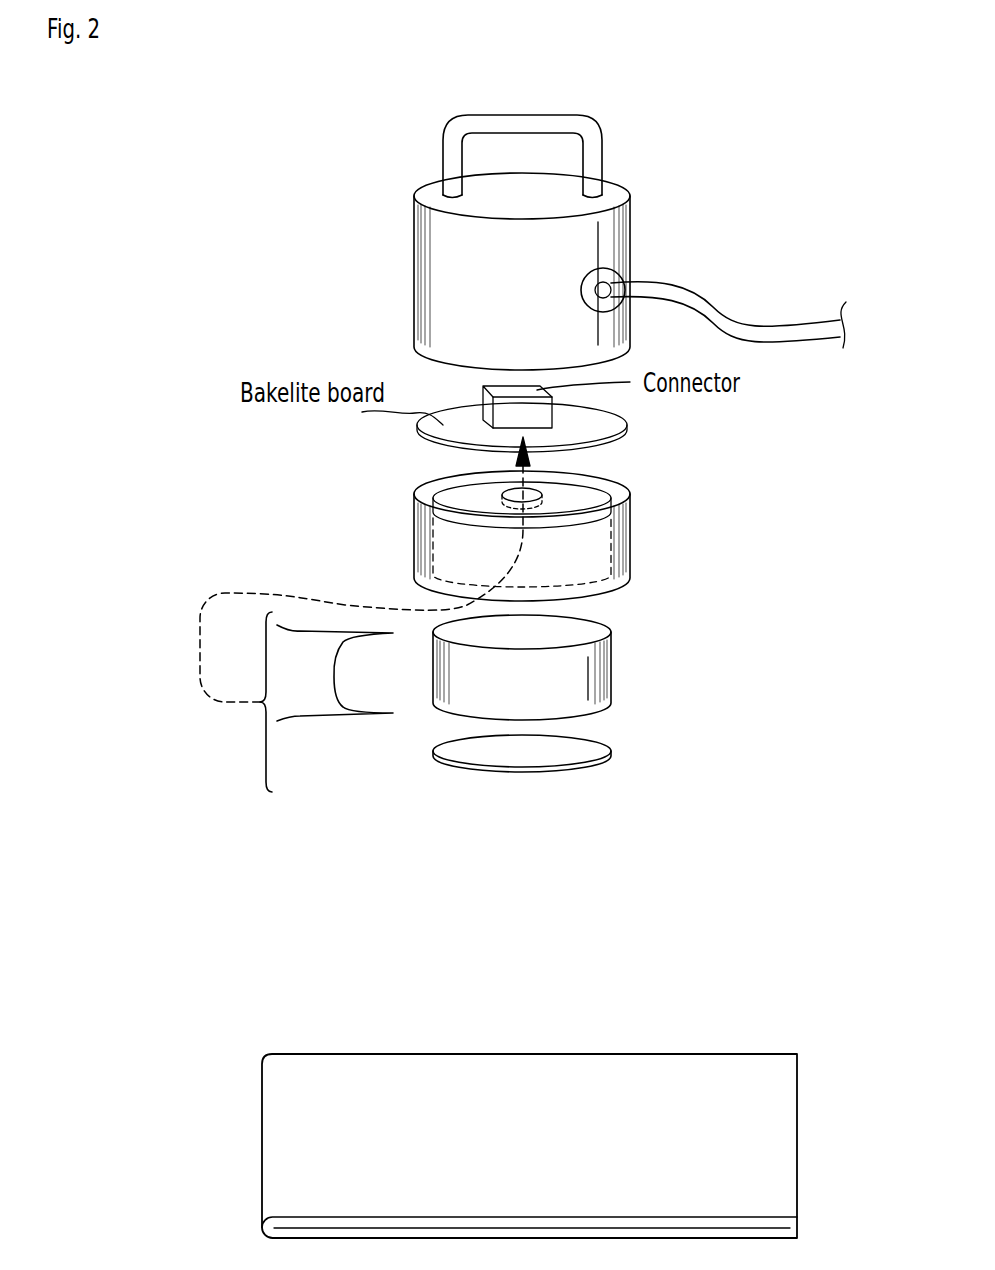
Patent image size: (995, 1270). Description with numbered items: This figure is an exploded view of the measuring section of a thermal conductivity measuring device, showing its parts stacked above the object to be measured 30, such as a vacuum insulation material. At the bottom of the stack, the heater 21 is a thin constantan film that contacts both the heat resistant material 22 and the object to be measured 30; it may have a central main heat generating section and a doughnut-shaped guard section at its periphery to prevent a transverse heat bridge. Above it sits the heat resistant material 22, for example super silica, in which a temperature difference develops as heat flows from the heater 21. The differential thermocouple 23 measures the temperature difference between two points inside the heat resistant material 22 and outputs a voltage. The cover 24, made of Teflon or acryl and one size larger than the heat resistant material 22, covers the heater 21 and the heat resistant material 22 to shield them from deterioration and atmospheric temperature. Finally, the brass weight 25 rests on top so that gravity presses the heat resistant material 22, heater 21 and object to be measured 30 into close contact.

The heater 21 is at (587, 768).
The heat resistant material 22 is at (613, 685).
The differential thermocouple 23 is at (313, 715).
The cover 24 is at (630, 522).
The weight 25 is at (633, 222).
The object to be measured 30 is at (715, 1053).